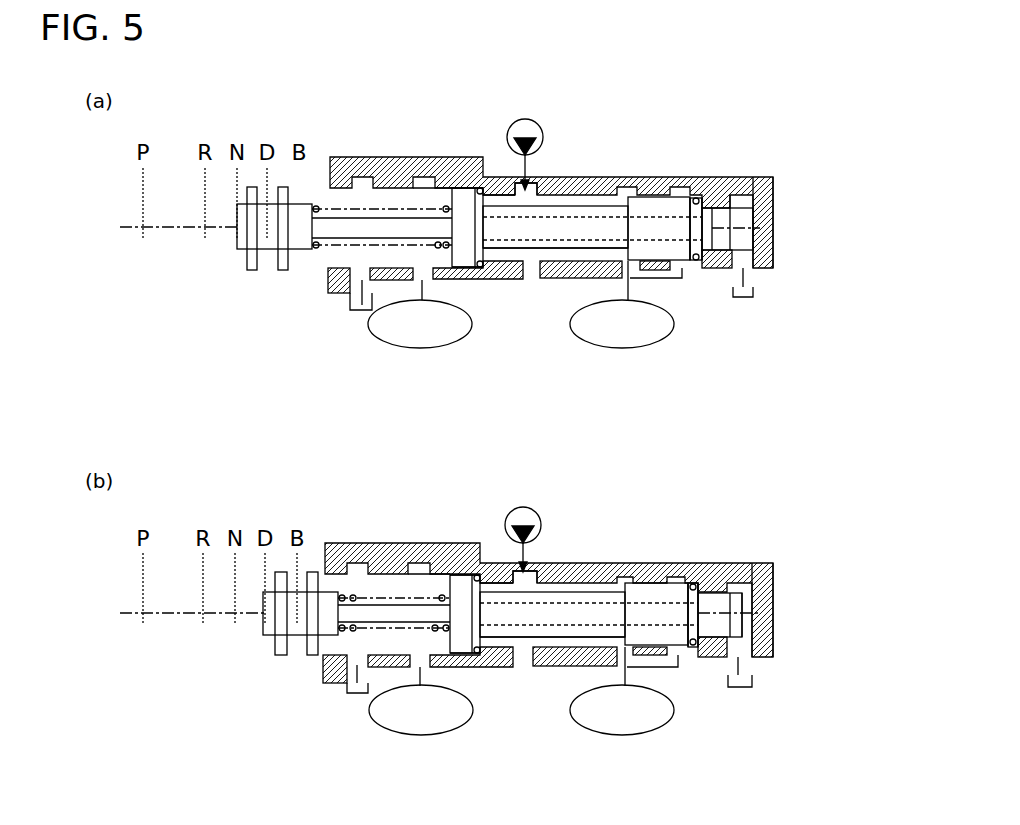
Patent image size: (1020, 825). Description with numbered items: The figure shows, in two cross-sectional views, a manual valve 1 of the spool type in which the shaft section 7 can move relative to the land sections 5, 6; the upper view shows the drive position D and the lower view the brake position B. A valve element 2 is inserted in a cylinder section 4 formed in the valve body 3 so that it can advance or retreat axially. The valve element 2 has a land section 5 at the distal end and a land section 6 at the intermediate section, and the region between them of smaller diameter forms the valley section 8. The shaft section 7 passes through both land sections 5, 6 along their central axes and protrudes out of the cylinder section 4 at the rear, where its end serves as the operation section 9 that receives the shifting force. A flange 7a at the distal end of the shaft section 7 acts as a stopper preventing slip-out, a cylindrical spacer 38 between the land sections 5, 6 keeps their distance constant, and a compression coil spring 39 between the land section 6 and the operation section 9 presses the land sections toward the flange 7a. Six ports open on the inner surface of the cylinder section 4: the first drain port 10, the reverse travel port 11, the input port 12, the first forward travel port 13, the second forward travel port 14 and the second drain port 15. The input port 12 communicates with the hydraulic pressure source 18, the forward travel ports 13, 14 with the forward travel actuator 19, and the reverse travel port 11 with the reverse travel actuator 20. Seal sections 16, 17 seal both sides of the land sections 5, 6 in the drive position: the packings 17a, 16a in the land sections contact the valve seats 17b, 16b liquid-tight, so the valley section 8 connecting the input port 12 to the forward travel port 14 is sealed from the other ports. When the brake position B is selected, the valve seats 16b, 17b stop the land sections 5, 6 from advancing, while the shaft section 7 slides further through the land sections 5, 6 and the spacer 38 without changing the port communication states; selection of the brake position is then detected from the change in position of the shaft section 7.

The manual valve 1 is at (328, 140).
The valve element 2 is at (722, 220).
The valve body 3 is at (742, 177).
The cylinder section 4 is at (600, 188).
The land section 5 is at (650, 197).
The land section 6 is at (458, 166).
The shaft section 7 is at (333, 233).
The flange 7a is at (752, 198).
The valley section 8 is at (590, 252).
The operation section 9 is at (252, 272).
The first drain port 10 is at (347, 275).
The reverse travel port 11 is at (424, 282).
The input port 12 is at (530, 182).
The first forward travel port 13 is at (622, 272).
The second forward travel port 14 is at (690, 268).
The second drain port 15 is at (768, 242).
The seal section 16 is at (698, 260).
The packing 16a is at (683, 197).
The valve seat 16b is at (708, 197).
The seal section 17 is at (483, 268).
The packing 17a is at (430, 166).
The valve seat 17b is at (489, 165).
The hydraulic pressure source 18 is at (538, 124).
The forward travel actuator 19 is at (622, 348).
The reverse travel actuator 20 is at (421, 348).
The cylindrical spacer 38 is at (525, 232).
The compression coil spring 39 is at (336, 165).